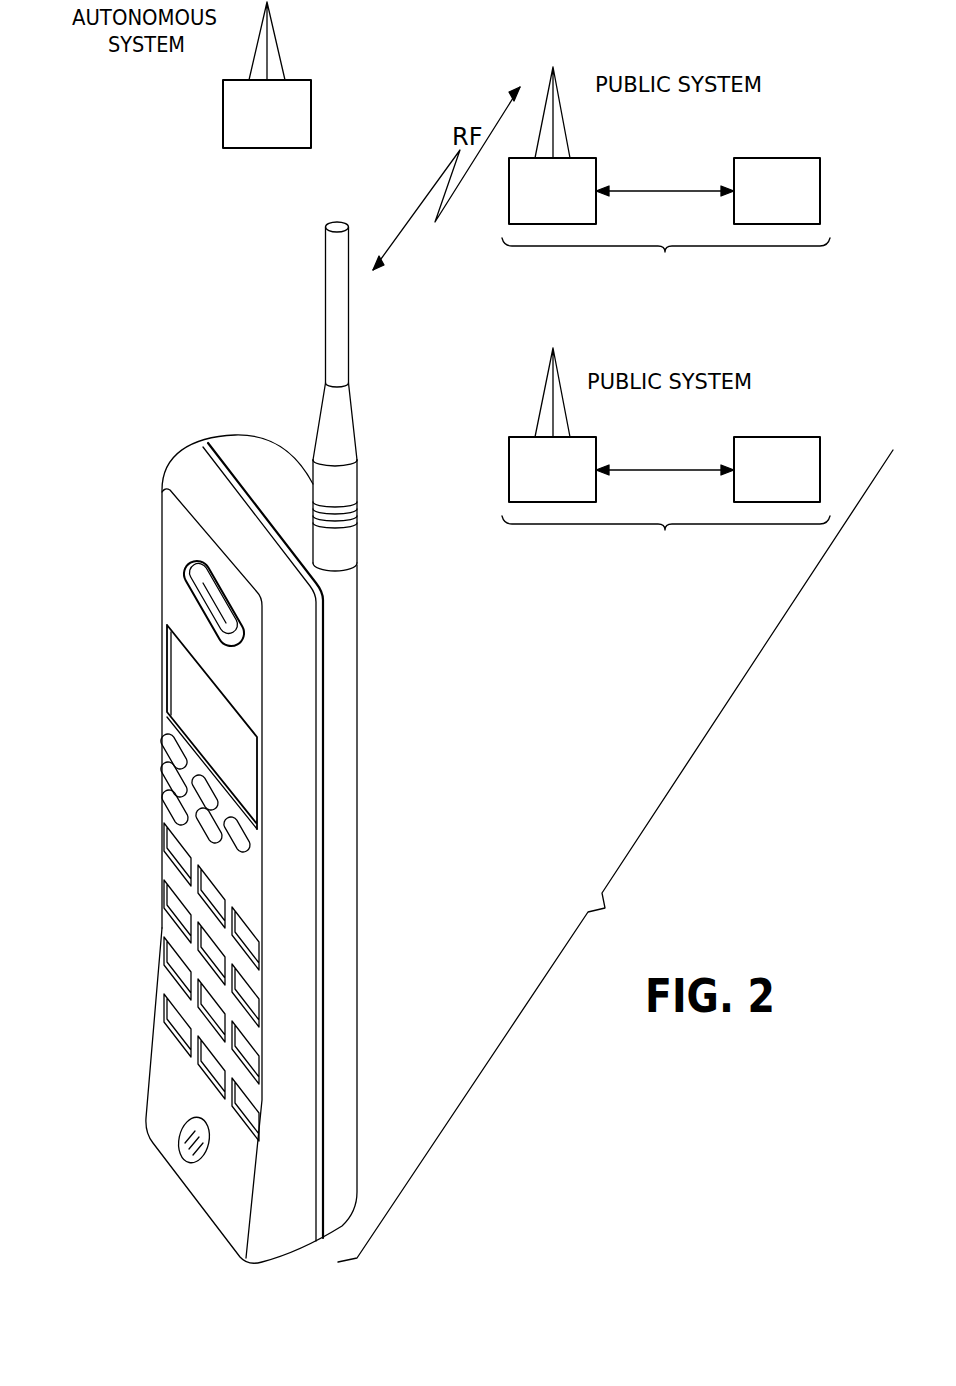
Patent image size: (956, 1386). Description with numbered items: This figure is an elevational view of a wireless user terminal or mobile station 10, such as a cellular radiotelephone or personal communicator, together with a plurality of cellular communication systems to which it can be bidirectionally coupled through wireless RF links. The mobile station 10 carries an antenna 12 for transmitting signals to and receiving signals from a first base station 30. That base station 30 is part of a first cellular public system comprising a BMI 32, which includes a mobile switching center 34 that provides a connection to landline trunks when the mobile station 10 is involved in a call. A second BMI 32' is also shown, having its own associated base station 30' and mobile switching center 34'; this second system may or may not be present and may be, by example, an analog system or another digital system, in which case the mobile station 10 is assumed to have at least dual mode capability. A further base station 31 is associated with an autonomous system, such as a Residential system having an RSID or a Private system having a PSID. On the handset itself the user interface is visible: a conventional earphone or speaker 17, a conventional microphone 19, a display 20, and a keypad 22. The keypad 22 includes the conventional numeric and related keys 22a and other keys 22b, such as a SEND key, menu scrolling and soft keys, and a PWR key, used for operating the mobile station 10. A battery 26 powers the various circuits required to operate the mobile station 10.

The mobile station 10 is at (143, 439).
The antenna 12 is at (330, 292).
The speaker 17 is at (200, 584).
The microphone 19 is at (183, 1153).
The display 20 is at (178, 689).
The keypad 22 is at (190, 937).
The numeric and related keys 22a is at (172, 990).
The other keys 22b is at (210, 790).
The battery 26 is at (352, 1047).
The base station 30 is at (567, 145).
The base station 30' is at (571, 425).
The base station 31 is at (297, 80).
The BMI 32 is at (666, 241).
The second BMI 32' is at (666, 518).
The mobile switching center 34 is at (777, 163).
The mobile switching center 34' is at (777, 438).